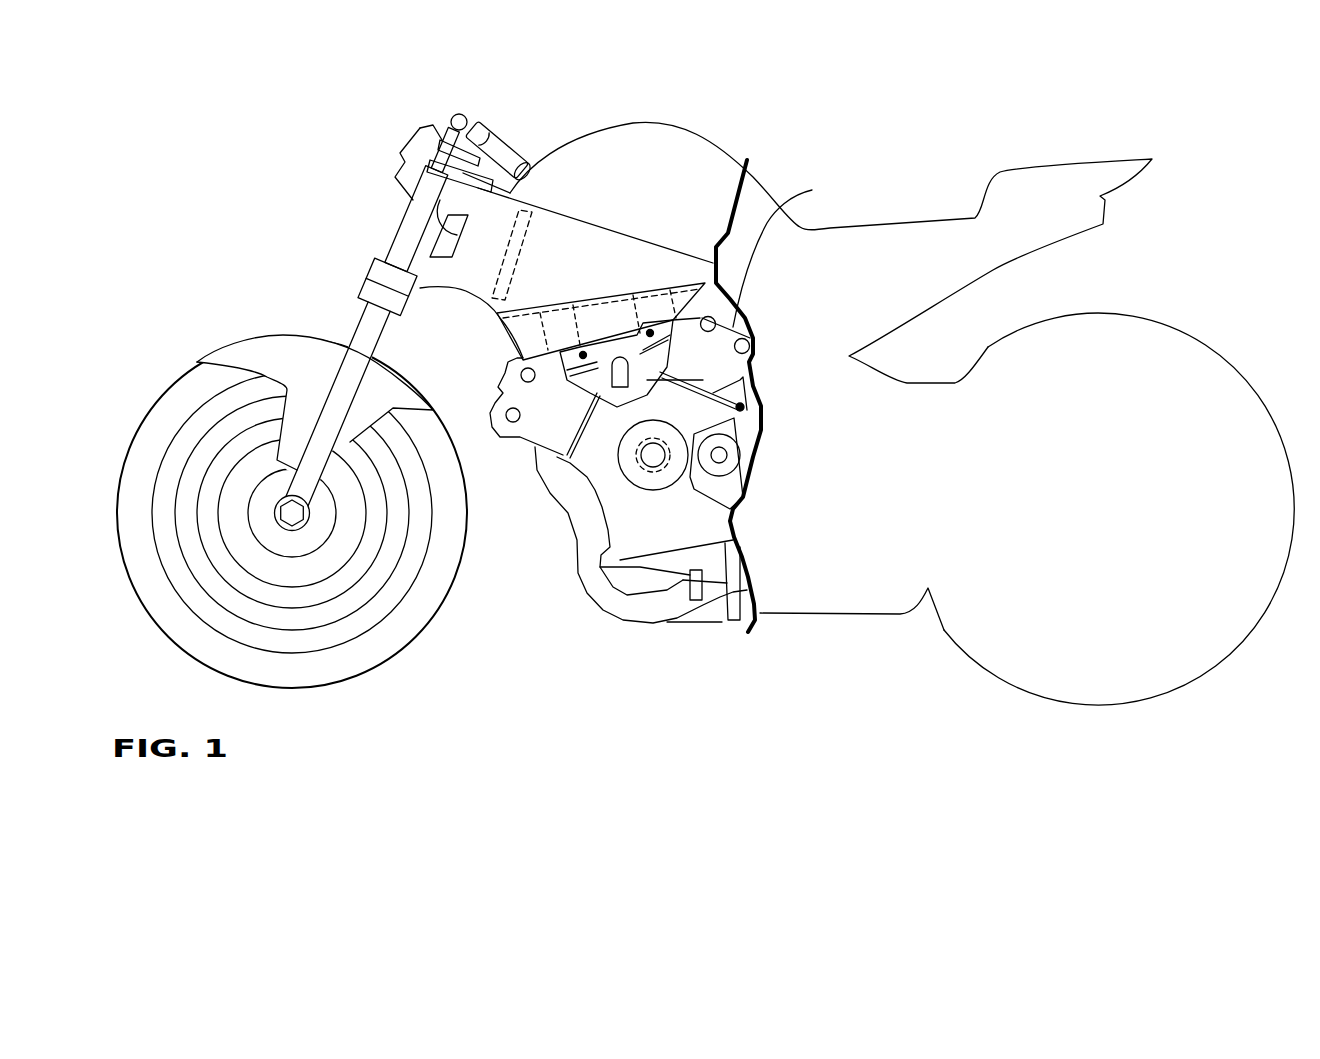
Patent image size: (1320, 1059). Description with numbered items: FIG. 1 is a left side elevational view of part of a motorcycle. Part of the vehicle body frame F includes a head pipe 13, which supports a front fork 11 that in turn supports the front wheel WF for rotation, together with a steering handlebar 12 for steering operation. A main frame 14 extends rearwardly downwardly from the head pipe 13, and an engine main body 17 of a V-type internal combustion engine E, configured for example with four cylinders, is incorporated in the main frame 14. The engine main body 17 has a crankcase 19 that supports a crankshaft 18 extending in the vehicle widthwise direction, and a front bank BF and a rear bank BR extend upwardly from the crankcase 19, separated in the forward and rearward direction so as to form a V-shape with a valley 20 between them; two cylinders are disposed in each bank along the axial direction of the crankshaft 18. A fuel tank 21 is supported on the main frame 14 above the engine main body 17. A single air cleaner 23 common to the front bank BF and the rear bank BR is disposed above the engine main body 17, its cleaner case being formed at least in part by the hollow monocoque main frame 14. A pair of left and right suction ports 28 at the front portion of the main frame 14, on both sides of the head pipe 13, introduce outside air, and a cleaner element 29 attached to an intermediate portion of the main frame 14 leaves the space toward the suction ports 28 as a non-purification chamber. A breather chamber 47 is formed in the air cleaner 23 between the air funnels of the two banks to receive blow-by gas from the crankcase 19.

The front fork 11 is at (345, 388).
The steering handlebar 12 is at (459, 113).
The head pipe 13 is at (418, 245).
The main frame 14 is at (597, 247).
The engine main body 17 is at (710, 552).
The crankshaft 18 is at (652, 475).
The crankcase 19 is at (637, 527).
The valley 20 is at (700, 373).
The fuel tank 21 is at (706, 132).
The air cleaner 23 is at (466, 301).
The suction ports 28 is at (462, 186).
The cleaner element 29 is at (527, 228).
The breather chamber 47 is at (613, 297).
The front wheel WF is at (163, 425).
The vehicle body frame F is at (594, 209).
The rear bank BR is at (791, 251).
The front bank BF is at (517, 450).
The internal combustion engine E is at (588, 491).